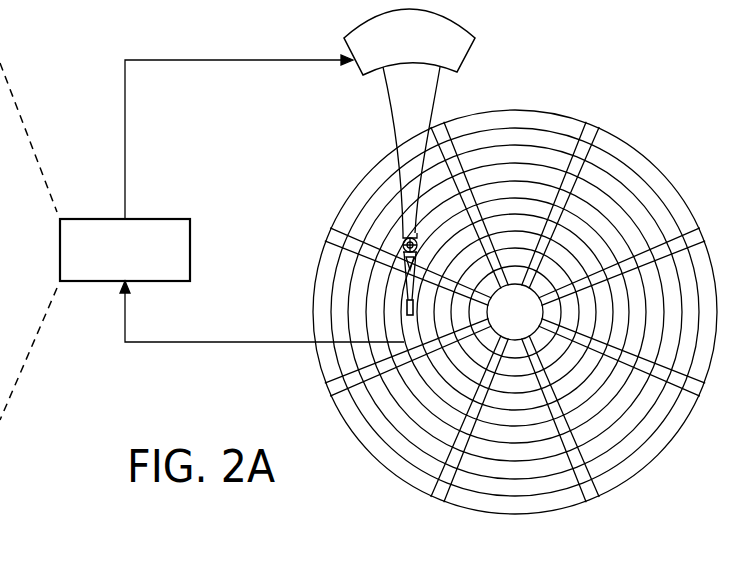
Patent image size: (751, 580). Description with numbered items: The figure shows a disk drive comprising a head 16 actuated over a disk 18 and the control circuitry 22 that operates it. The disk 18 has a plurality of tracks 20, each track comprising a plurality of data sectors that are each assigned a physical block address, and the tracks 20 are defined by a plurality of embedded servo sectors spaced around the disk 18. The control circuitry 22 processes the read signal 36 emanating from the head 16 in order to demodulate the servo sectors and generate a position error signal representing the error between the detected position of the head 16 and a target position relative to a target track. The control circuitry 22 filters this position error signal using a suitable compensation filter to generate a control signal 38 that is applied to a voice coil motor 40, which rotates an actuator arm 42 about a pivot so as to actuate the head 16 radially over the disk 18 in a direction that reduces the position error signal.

The head 16 is at (396, 314).
The disk 18 is at (522, 305).
The tracks 20 is at (513, 138).
The control circuitry 22 is at (161, 219).
The read signal 36 is at (218, 344).
The control signal 38 is at (125, 127).
The voice coil motor 40 is at (359, 74).
The actuator arm 42 is at (396, 138).